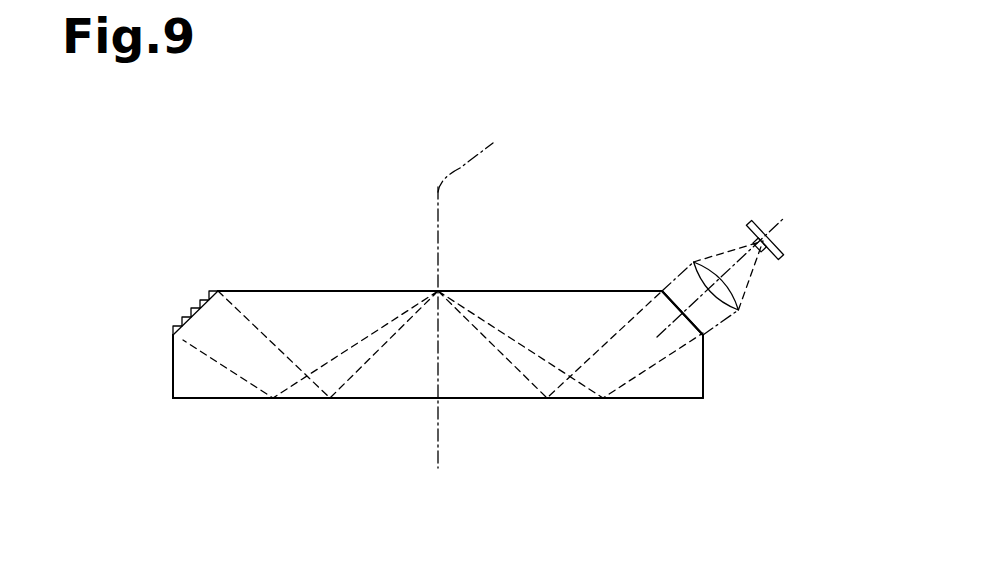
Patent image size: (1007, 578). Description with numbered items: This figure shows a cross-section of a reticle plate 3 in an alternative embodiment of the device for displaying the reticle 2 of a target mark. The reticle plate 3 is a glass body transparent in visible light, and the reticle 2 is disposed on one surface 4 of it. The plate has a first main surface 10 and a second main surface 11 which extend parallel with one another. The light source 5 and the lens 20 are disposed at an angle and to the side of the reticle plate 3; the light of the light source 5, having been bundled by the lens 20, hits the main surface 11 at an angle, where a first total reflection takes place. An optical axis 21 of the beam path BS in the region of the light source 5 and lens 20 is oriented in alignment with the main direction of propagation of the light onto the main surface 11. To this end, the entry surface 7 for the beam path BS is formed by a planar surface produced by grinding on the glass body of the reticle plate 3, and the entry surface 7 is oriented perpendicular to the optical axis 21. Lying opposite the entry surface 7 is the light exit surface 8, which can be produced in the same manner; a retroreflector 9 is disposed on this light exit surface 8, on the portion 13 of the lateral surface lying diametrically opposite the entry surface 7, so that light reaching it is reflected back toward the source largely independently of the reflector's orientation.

The reticle 2 is at (445, 276).
The reticle plate 3 is at (290, 318).
The surface 4 is at (240, 291).
The light source 5 is at (779, 280).
The entry surface 7 is at (663, 305).
The light exit surface 8 is at (203, 320).
The retroreflector 9 is at (163, 280).
The first main surface 10 is at (535, 290).
The second main surface 11 is at (500, 398).
The portion of the lateral surface 13 is at (157, 216).
The lens 20 is at (753, 327).
The optical axis 21 is at (732, 251).
The beam path BS is at (617, 327).